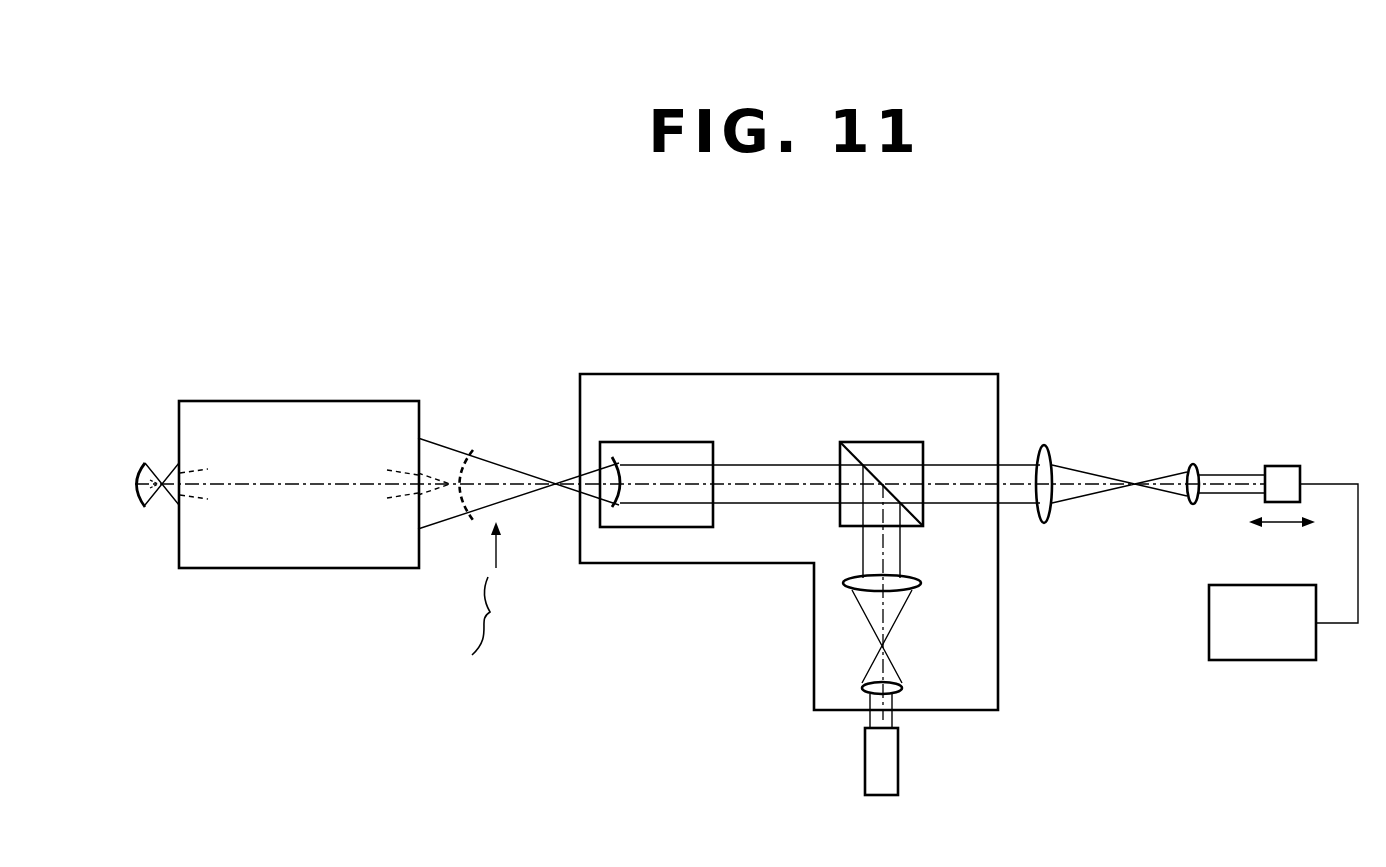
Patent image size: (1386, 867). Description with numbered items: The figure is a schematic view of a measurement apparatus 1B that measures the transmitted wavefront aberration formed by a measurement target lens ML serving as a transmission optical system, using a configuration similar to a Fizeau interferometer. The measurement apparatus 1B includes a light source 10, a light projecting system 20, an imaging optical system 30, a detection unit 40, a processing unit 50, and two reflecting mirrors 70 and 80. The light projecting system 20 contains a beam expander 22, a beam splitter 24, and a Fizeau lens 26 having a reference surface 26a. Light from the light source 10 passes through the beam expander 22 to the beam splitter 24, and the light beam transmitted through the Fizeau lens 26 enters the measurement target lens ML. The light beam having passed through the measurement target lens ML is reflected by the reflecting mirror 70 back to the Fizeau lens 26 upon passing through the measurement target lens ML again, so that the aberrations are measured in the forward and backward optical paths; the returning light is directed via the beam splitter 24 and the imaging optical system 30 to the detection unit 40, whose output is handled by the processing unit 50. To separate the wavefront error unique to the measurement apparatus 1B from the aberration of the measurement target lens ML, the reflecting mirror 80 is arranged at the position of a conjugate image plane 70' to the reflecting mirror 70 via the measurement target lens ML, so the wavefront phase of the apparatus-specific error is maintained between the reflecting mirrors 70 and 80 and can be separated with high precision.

The measurement apparatus 1B is at (776, 316).
The measurement target lens ML is at (292, 401).
The reflecting mirror 70 is at (148, 448).
The conjugate image plane 70' is at (463, 443).
The reflecting mirror 80 is at (476, 606).
The light projecting system 20 is at (628, 564).
The Fizeau lens 26 is at (697, 442).
The reference surface 26a is at (617, 457).
The beam splitter 24 is at (883, 442).
The beam expander 22 is at (926, 578).
The light source 10 is at (898, 766).
The imaging optical system 30 is at (1045, 435).
The detection unit 40 is at (1283, 466).
The processing unit 50 is at (1267, 661).